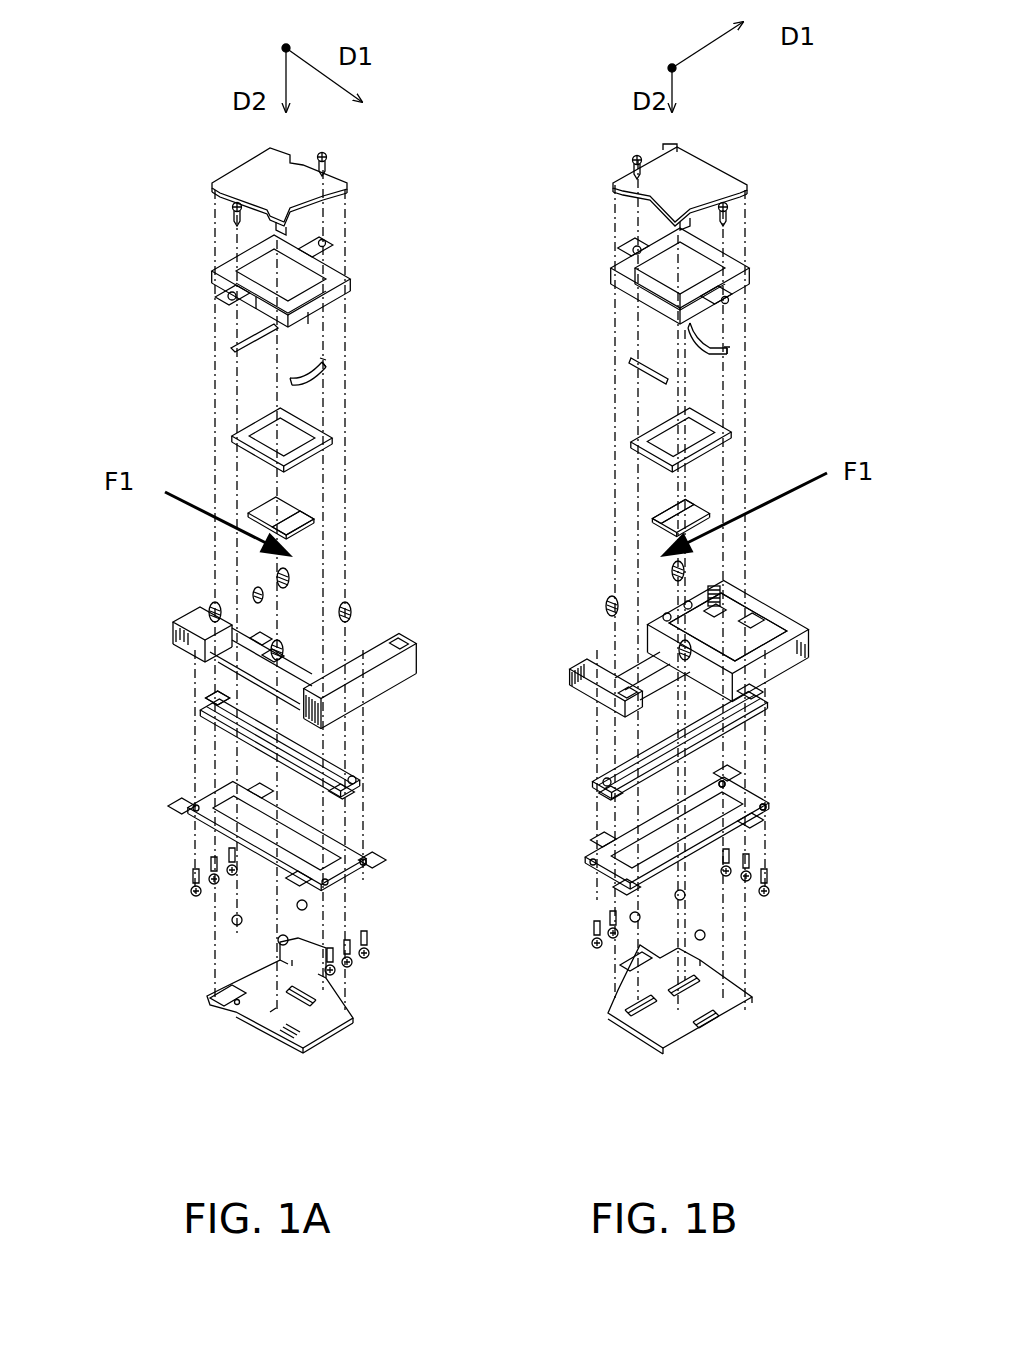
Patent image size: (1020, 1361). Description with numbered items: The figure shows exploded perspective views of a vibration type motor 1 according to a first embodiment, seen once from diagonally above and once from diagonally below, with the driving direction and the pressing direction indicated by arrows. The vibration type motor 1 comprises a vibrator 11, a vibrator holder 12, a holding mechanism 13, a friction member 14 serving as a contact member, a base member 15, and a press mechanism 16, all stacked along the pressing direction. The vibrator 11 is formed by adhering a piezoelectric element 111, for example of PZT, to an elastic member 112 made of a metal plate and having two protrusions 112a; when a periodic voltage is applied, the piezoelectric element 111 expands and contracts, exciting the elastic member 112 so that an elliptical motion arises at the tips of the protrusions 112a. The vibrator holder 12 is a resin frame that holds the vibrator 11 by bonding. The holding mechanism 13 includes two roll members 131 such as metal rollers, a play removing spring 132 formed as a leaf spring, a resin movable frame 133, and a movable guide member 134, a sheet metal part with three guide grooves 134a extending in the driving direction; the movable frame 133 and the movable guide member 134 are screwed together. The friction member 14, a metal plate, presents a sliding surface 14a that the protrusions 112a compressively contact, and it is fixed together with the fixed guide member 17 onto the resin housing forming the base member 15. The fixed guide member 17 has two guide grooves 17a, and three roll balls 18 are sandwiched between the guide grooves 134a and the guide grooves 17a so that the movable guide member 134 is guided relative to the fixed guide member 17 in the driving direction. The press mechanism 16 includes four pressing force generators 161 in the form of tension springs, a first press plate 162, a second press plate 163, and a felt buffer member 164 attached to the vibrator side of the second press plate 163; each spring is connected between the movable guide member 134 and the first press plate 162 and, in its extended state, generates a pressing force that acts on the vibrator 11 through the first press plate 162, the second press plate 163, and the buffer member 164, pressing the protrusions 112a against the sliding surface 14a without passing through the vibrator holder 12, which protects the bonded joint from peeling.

In FIG. 1A, the vibration type motor 1 is at (372, 1083).
In FIG. 1B, the vibration type motor 1 is at (578, 1069).
In FIG. 1A, the vibrator 11 is at (226, 596).
In FIG. 1B, the vibrator 11 is at (702, 574).
In FIG. 1A, the piezoelectric element 111 is at (252, 591).
In FIG. 1B, the elastic member 112 is at (690, 612).
In FIG. 1B, the protrusions 112a is at (700, 606).
In FIG. 1A, the vibrator holder 12 is at (340, 437).
In FIG. 1B, the vibrator holder 12 is at (635, 433).
In FIG. 1A, the holding mechanism 13 is at (159, 302).
In FIG. 1A, the roll members 131 is at (277, 327).
In FIG. 1B, the roll members 131 is at (680, 323).
In FIG. 1A, the play removing spring 132 is at (327, 366).
In FIG. 1B, the play removing spring 132 is at (727, 348).
In FIG. 1A, the movable frame 133 is at (345, 258).
In FIG. 1B, the movable frame 133 is at (613, 258).
In FIG. 1A, the movable guide member 134 is at (357, 1020).
In FIG. 1B, the movable guide member 134 is at (597, 1007).
In FIG. 1A, the guide grooves 134a is at (270, 1015).
In FIG. 1A, the friction member 14 is at (357, 768).
In FIG. 1B, the friction member 14 is at (600, 768).
In FIG. 1A, the sliding surface 14a is at (223, 711).
In FIG. 1A, the base member 15 is at (412, 652).
In FIG. 1B, the base member 15 is at (563, 658).
In FIG. 1A, the press mechanism 16 is at (102, 414).
In FIG. 1A, the pressing force generators 161 is at (230, 607).
In FIG. 1B, the pressing force generators 161 is at (672, 647).
In FIG. 1A, the first press plate 162 is at (350, 177).
In FIG. 1B, the first press plate 162 is at (612, 170).
In FIG. 1A, the second press plate 163 is at (300, 510).
In FIG. 1B, the second press plate 163 is at (668, 505).
In FIG. 1A, the buffer member 164 is at (392, 516).
In FIG. 1B, the buffer member 164 is at (660, 518).
In FIG. 1A, the fixed guide member 17 is at (380, 870).
In FIG. 1B, the fixed guide member 17 is at (583, 852).
In FIG. 1B, the guide grooves 17a is at (682, 807).
In FIG. 1A, the roll balls 18 is at (243, 920).
In FIG. 1B, the roll balls 18 is at (695, 934).